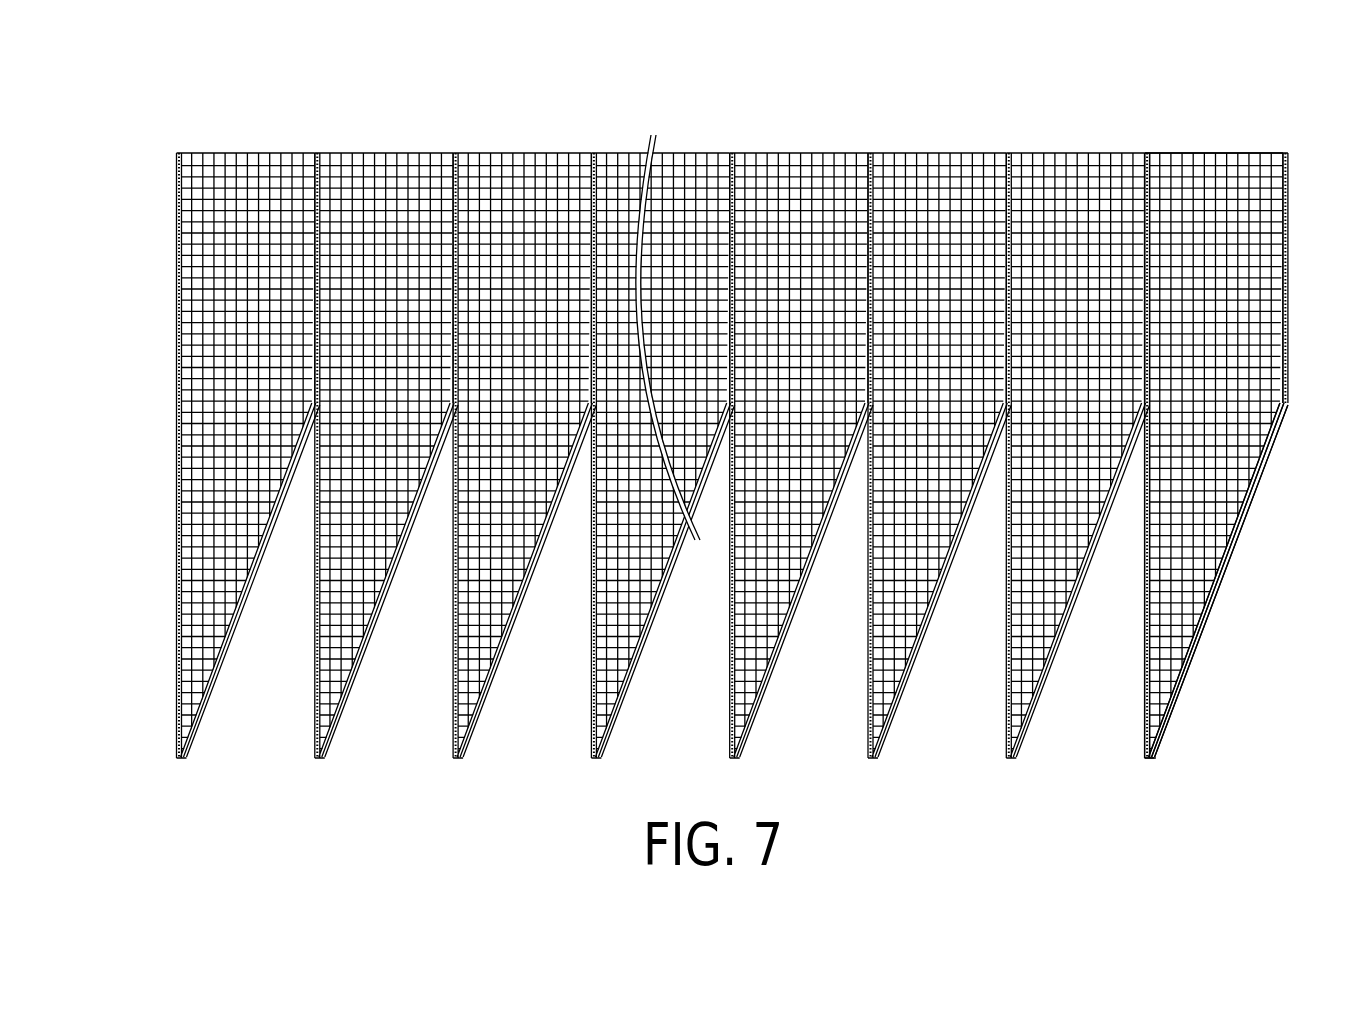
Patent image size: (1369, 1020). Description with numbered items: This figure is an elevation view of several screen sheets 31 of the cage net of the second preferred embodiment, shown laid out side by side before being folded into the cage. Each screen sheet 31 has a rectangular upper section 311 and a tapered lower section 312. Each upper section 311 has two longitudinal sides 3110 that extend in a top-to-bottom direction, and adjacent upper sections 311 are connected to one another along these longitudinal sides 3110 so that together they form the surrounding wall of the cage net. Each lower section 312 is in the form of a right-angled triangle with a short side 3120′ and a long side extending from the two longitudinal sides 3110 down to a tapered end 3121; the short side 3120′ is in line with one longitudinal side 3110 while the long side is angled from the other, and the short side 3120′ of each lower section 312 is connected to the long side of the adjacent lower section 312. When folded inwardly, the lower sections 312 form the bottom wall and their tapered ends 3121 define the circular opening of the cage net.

The screen sheet 31 is at (251, 135).
The upper section 311 is at (543, 220).
The lower section 312 is at (215, 508).
The longitudinal side 3110 is at (1148, 195).
The short side 3120′ is at (1148, 593).
The tapered end 3121 is at (1160, 752).